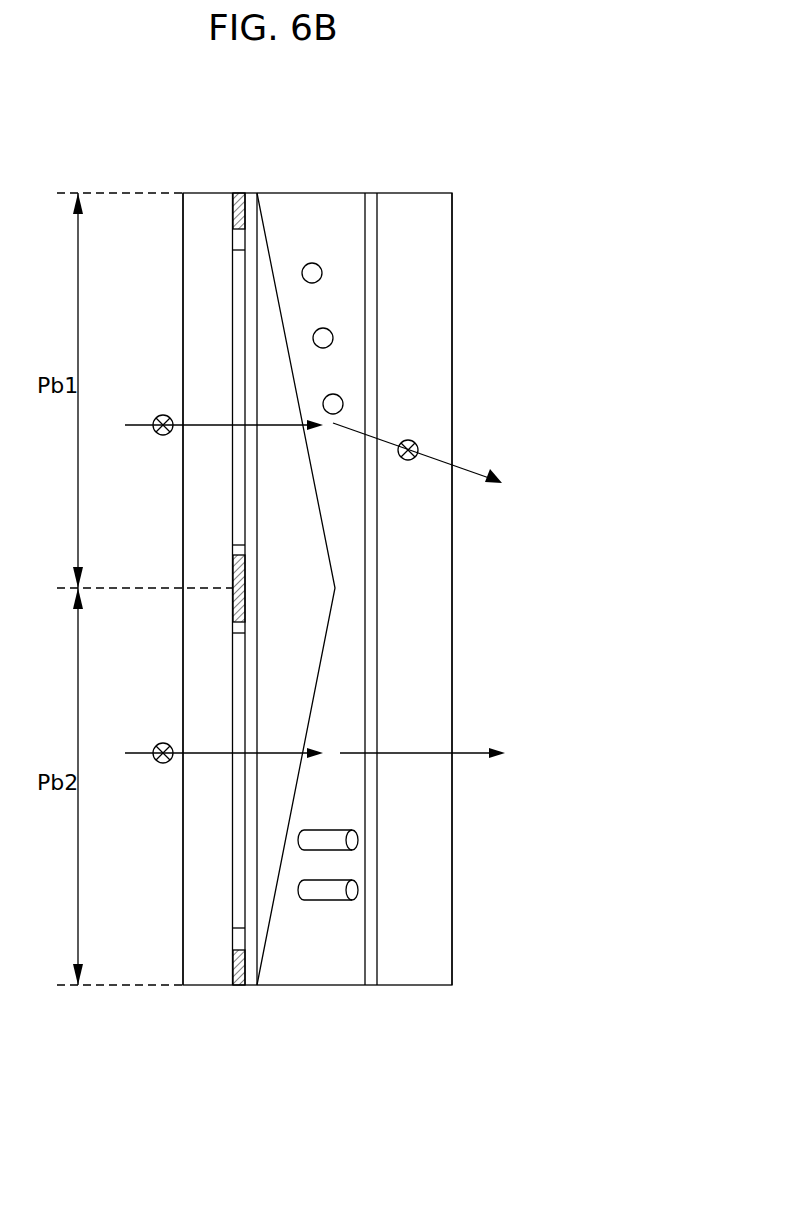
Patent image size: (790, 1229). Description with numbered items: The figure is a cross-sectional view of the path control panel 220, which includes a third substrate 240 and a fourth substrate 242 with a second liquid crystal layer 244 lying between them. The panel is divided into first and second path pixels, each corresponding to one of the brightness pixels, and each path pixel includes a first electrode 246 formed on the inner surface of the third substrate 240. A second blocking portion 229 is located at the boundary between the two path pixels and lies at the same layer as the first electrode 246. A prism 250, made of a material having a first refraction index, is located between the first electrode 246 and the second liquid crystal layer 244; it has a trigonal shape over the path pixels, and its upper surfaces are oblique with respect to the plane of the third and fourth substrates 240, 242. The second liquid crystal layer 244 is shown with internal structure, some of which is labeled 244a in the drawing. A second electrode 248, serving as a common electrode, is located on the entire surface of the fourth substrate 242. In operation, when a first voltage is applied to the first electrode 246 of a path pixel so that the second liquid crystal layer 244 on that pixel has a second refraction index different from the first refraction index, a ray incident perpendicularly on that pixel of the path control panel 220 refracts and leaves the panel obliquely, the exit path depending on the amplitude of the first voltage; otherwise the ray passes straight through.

The path control panel 220 is at (335, 140).
The second blocking portion 229 is at (232, 612).
The third substrate 240 is at (208, 970).
The fourth substrate 242 is at (413, 970).
The second liquid crystal layer 244 is at (365, 988).
The lens pattern 244a is at (311, 893).
The first electrode 246 is at (237, 260).
The second electrode 248 is at (378, 238).
The prism 250 is at (273, 702).